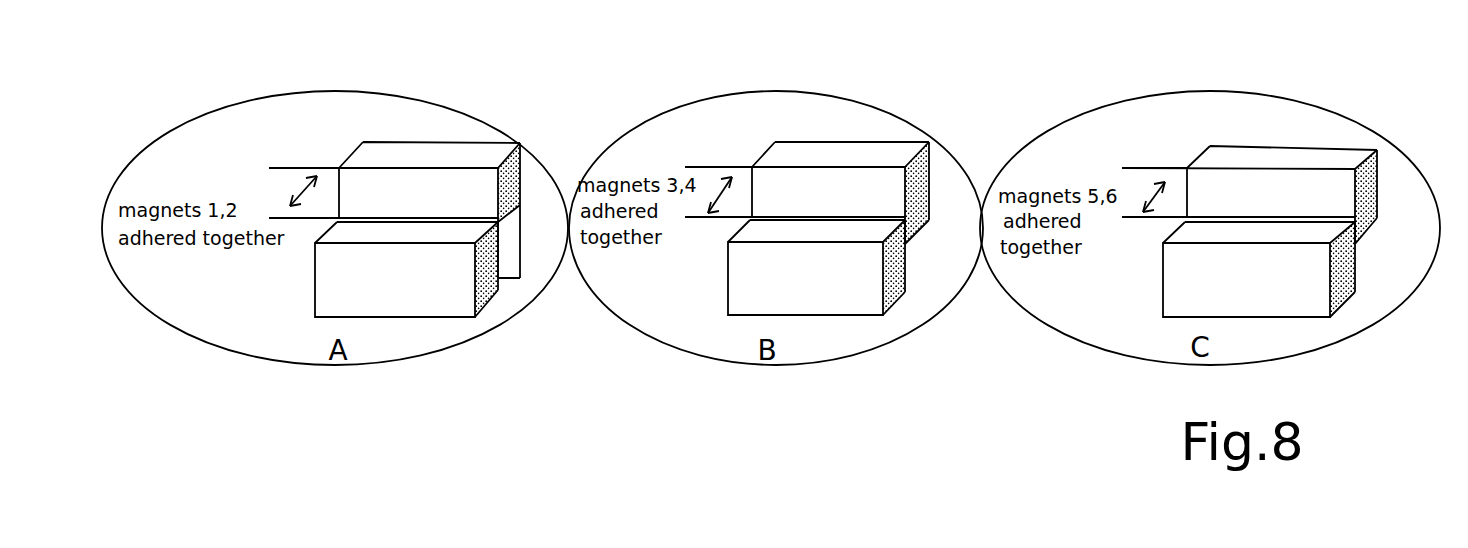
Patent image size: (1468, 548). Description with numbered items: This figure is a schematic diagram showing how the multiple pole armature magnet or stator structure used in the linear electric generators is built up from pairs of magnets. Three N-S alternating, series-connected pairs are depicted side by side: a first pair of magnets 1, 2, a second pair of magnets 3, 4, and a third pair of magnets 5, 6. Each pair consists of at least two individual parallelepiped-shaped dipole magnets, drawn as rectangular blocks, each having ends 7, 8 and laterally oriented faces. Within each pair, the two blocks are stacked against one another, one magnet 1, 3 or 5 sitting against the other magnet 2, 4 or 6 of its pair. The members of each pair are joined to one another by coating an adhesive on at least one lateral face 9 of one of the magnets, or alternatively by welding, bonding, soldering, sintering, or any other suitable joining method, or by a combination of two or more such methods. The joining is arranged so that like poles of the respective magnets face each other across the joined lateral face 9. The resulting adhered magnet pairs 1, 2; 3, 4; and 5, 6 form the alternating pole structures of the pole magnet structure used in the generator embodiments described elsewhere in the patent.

The magnet 1 is at (327, 287).
The magnet 2 is at (483, 157).
The magnet 3 is at (753, 270).
The magnet 4 is at (878, 152).
The magnet 5 is at (1177, 295).
The magnet 6 is at (1293, 153).
The end 7 is at (313, 258).
The end 8 is at (498, 278).
The lateral face 9 is at (458, 175).